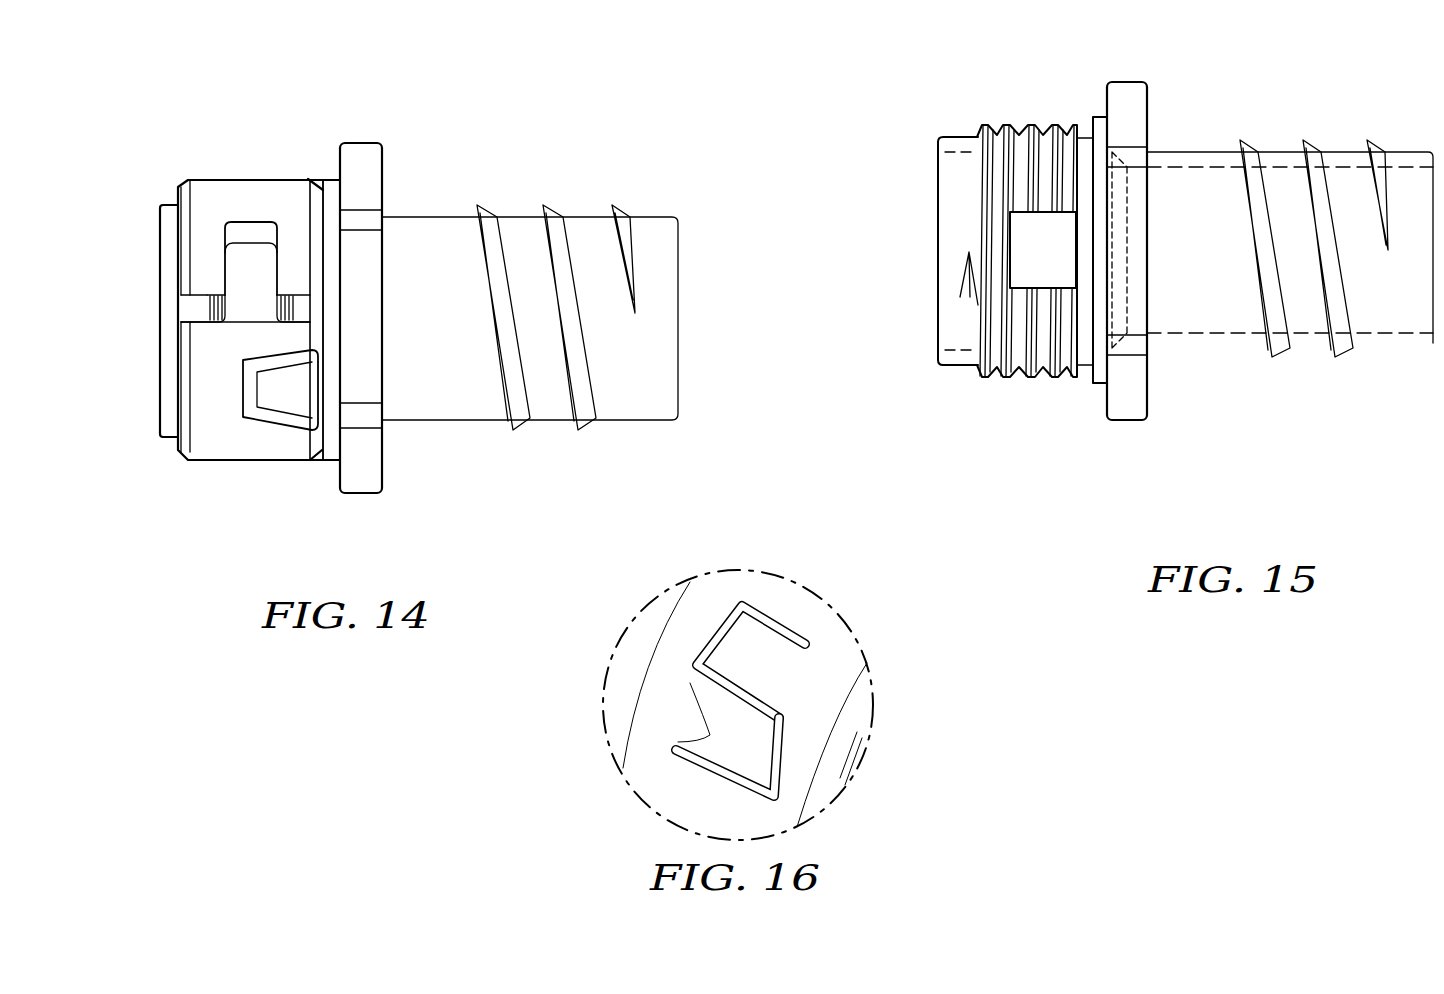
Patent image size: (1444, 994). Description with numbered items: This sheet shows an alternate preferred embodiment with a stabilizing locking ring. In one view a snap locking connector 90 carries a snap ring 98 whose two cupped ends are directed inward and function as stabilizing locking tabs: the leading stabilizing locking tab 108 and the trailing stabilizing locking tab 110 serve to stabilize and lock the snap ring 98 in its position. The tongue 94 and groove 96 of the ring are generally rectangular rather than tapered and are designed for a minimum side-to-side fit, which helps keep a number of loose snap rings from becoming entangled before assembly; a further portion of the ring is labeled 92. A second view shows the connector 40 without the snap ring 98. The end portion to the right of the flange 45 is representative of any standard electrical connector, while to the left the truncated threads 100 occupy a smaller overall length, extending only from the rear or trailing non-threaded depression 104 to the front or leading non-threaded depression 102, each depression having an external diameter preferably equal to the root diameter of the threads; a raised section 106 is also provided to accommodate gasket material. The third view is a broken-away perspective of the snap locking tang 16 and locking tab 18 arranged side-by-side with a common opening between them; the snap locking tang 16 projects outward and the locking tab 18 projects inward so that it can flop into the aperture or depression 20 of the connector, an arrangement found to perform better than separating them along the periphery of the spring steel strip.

In FIG. 14, the snap locking connector 90 is at (207, 178).
In FIG. 14, the nut neck 92 is at (318, 452).
In FIG. 14, the tongue 94 is at (270, 307).
In FIG. 14, the groove 96 is at (257, 227).
In FIG. 14, the snap ring 98 is at (232, 437).
In FIG. 14, the leading stabilizing locking tab 108 is at (182, 462).
In FIG. 14, the trailing stabilizing locking tab 110 is at (322, 180).
In FIG. 15, the connector 40 is at (1160, 140).
In FIG. 15, the aperture or depression 20 is at (1056, 262).
In FIG. 15, the truncated threads 100 is at (1014, 378).
In FIG. 15, the front or leading non-threaded section or depression 102 is at (948, 368).
In FIG. 15, the rear or trailing non-threaded section or depression 104 is at (1083, 385).
In FIG. 15, the raised section 106 is at (1100, 387).
In FIG. 15, the flange 45 is at (1133, 434).
In FIG. 16, the snap locking tang 16 is at (750, 765).
In FIG. 16, the locking tab 18 is at (786, 683).